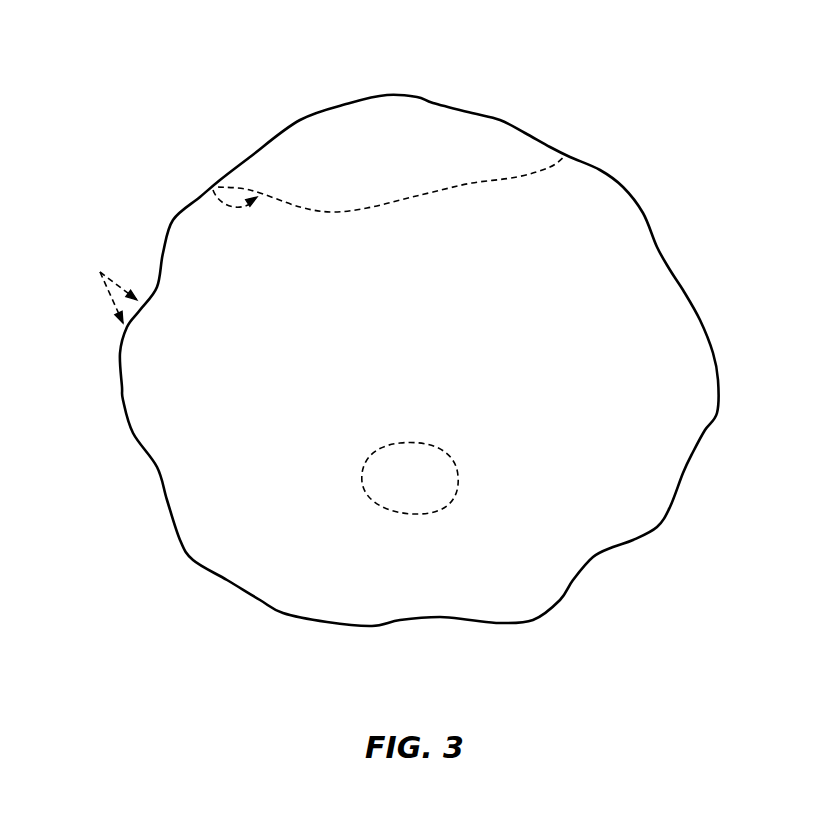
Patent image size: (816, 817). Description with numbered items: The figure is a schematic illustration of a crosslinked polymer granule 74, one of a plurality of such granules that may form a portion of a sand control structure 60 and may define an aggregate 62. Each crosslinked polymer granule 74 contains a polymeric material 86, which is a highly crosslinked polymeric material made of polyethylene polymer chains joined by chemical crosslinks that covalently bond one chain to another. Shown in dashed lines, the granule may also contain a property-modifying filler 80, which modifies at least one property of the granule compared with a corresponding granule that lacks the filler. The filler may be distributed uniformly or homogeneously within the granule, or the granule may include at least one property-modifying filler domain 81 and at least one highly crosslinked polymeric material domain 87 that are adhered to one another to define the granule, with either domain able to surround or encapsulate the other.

The sand control structure 60 is at (93, 72).
The aggregate 62 is at (82, 135).
The crosslinked polymer granule 74 is at (150, 287).
The property-modifying filler 80 is at (297, 167).
The property-modifying filler domain 81 is at (211, 190).
The polymeric material 86 is at (626, 500).
The highly crosslinked polymeric material domain 87 is at (657, 435).